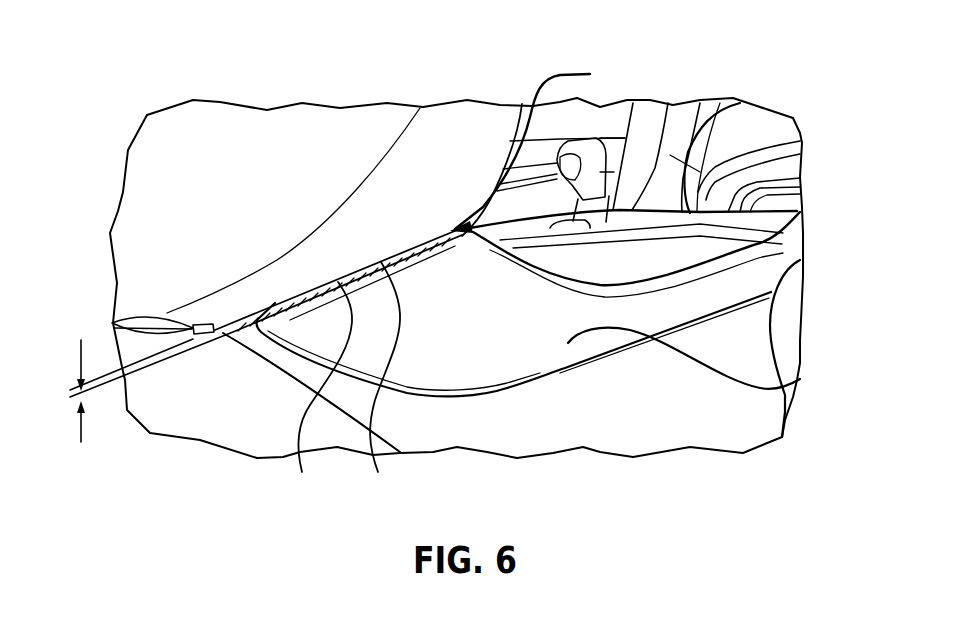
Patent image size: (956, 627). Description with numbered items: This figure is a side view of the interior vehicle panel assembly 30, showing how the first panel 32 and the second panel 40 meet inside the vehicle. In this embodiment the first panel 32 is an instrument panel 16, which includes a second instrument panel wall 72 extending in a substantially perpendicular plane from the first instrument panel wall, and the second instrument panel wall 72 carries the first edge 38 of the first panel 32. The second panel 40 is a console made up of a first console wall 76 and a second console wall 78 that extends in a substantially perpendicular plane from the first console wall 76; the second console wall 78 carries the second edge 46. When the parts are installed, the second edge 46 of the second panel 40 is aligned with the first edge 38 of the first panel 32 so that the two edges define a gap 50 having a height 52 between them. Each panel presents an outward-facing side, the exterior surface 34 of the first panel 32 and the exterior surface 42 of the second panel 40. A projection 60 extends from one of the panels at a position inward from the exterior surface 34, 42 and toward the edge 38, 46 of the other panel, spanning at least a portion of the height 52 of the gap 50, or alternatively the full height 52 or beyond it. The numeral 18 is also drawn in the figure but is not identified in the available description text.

The interior vehicle panel assembly 30 is at (173, 91).
The instrument panel 16 is at (287, 132).
The second instrument panel wall 72 is at (350, 145).
The first panel 32 is at (480, 133).
The gap 50 is at (536, 146).
The first console wall 76 is at (744, 118).
The second panel 40 is at (800, 208).
The first edge 38 is at (268, 305).
The height 52 is at (80, 354).
The exterior surface 42 is at (471, 360).
The exterior surface 34 is at (275, 216).
The second edge 46 is at (321, 390).
The projection 60 is at (383, 380).
The second console wall 78 is at (800, 379).
The floor / seat region 18 is at (733, 418).